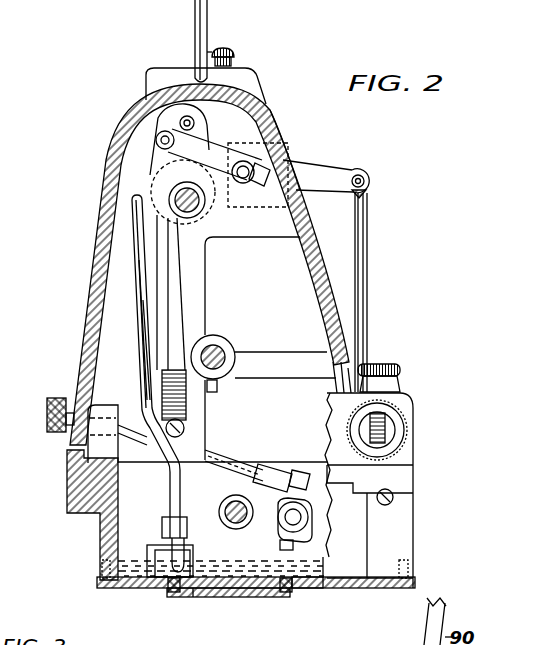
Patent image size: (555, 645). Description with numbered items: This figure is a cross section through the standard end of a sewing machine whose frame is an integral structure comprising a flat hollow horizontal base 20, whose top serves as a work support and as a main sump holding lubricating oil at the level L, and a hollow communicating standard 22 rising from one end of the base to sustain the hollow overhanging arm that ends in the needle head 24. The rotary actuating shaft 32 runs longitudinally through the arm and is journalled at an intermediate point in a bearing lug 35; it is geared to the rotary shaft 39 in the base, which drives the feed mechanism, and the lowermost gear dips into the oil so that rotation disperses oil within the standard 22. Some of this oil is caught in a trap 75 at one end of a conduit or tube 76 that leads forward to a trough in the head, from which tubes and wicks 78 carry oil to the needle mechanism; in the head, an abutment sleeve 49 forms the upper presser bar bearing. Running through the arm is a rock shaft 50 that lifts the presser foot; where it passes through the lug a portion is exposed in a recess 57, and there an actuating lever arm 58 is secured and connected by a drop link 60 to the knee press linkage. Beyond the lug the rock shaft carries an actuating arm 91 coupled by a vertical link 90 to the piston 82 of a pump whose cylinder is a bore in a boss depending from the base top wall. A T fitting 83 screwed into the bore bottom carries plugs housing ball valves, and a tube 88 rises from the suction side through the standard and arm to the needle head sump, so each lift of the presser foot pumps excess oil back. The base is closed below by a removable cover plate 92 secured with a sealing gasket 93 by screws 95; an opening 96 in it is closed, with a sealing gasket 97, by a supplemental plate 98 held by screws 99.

The base 20 is at (60, 478).
The standard 22 is at (97, 200).
The needle head 24 is at (150, 86).
The rotary actuating shaft 32 is at (196, 212).
The bearing lug 35 is at (278, 224).
The rotary shaft 39 is at (227, 503).
The abutment sleeve 49 is at (234, 52).
The rock shaft 50 is at (243, 184).
The recess 57 is at (277, 122).
The actuating lever arm 58 is at (332, 172).
The drop link 60 is at (360, 273).
The trap 75 is at (180, 118).
The conduit or tube 76 is at (156, 136).
The tubes and wicks 78 is at (136, 197).
The piston 82 is at (185, 450).
The T fitting 83 is at (177, 552).
The tube 88 is at (146, 343).
The vertical link 90 is at (163, 293).
The actuating arm 91 is at (247, 158).
The cover plate 92 is at (132, 588).
The sealing gasket 93 is at (352, 582).
The screws 95 is at (102, 570).
The opening 96 is at (193, 596).
The sealing gasket 97 is at (293, 589).
The supplemental plate 98 is at (224, 592).
The screws 99 is at (174, 592).
The oil level L is at (130, 555).